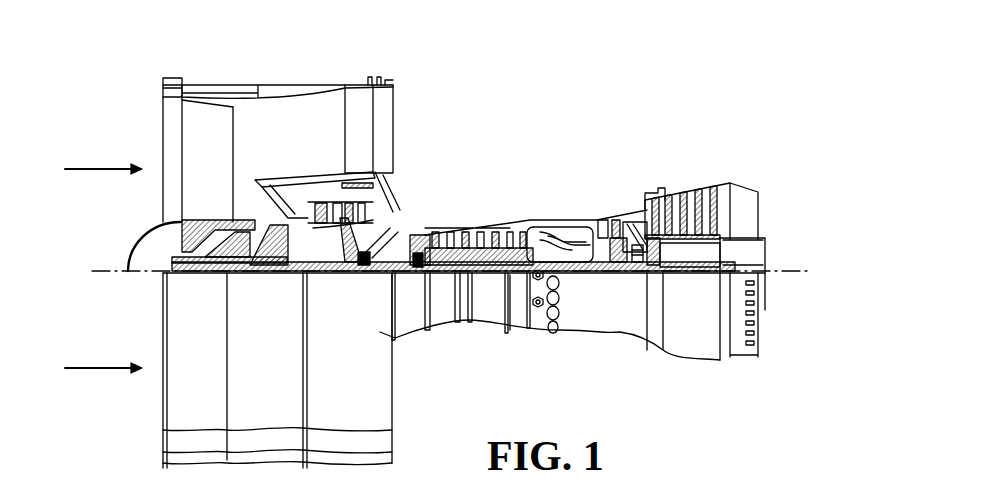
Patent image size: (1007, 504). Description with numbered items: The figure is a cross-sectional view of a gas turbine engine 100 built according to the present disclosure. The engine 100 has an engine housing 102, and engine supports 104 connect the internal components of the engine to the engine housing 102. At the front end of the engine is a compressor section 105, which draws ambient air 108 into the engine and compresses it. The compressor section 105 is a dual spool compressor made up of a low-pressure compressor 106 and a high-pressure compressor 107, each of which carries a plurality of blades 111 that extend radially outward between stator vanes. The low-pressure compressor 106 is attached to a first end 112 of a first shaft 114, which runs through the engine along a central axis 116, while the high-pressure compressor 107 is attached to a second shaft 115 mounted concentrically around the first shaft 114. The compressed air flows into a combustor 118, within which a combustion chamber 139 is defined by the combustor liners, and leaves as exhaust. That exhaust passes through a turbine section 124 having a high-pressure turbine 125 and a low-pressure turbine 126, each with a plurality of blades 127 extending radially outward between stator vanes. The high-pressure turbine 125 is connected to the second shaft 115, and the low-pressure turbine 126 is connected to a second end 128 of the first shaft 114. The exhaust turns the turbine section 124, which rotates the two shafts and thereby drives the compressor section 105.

The gas turbine engine 100 is at (543, 92).
The engine housing 102 is at (275, 64).
The engine supports 104 is at (362, 117).
The compressor section 105 is at (443, 210).
The low-pressure compressor 106 is at (392, 210).
The high-pressure compressor 107 is at (540, 243).
The ambient air 108 is at (117, 170).
The blades 111 is at (470, 225).
The first end 112 is at (420, 272).
The first shaft 114 is at (515, 286).
The second shaft 115 is at (577, 280).
The central axis 116 is at (783, 270).
The combustor 118 is at (580, 188).
The turbine section 124 is at (657, 186).
The high-pressure turbine 125 is at (670, 205).
The low-pressure turbine 126 is at (758, 233).
The blades 127 is at (700, 183).
The second end 128 is at (600, 277).
The combustion chamber 139 is at (568, 247).